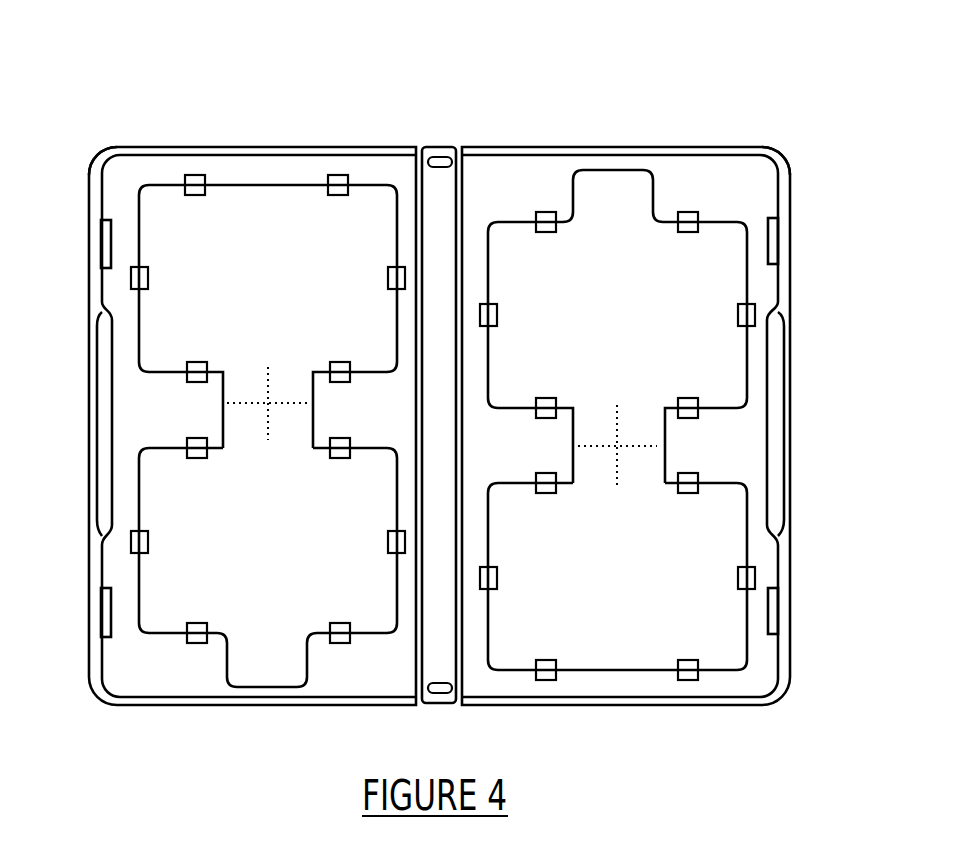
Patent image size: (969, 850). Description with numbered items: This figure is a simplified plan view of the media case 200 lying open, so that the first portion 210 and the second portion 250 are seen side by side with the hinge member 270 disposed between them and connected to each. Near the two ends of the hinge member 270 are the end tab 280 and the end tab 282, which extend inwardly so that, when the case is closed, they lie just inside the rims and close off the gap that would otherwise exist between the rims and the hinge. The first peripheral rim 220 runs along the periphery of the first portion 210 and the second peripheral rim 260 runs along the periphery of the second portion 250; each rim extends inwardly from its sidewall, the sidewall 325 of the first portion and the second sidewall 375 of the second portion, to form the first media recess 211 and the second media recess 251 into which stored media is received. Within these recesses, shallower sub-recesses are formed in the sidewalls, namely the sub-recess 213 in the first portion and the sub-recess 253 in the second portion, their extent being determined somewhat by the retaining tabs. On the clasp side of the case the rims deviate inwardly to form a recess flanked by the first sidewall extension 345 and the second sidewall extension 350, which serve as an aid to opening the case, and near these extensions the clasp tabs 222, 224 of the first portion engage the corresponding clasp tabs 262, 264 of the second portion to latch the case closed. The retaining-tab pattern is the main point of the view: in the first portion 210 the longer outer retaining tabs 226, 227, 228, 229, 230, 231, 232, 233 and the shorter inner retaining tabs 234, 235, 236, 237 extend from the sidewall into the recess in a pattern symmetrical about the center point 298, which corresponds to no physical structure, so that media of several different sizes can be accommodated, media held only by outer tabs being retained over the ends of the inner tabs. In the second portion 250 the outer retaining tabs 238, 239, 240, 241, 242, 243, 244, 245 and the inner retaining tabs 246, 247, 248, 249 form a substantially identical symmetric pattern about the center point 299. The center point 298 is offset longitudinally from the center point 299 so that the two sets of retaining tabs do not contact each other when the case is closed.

The media case 200 is at (686, 70).
The first portion 210 is at (243, 90).
The second portion 250 is at (555, 90).
The hinge member 270 is at (443, 102).
The end tab 280 is at (443, 157).
The end tab 282 is at (440, 704).
The first peripheral rim 220 is at (162, 152).
The second peripheral rim 260 is at (682, 155).
The sidewall 325 is at (117, 180).
The second sidewall 375 is at (748, 172).
The first sidewall extension 345 is at (95, 490).
The second sidewall extension 350 is at (781, 486).
The clasp tab 224 is at (103, 243).
The clasp tab 222 is at (100, 616).
The clasp tab 264 is at (775, 240).
The clasp tab 262 is at (775, 590).
The first media recess 211 is at (382, 420).
The sub-recess 213 is at (287, 475).
The sub-recess 253 is at (634, 375).
The second media recess 251 is at (541, 457).
The center point 298 is at (228, 398).
The center point 299 is at (618, 446).
The outer retaining tab 232 is at (204, 175).
The outer retaining tab 231 is at (348, 175).
The outer retaining tab 233 is at (130, 275).
The outer retaining tab 230 is at (385, 280).
The inner retaining tab 237 is at (196, 362).
The inner retaining tab 236 is at (340, 362).
The inner retaining tab 234 is at (195, 458).
The inner retaining tab 235 is at (340, 458).
The outer retaining tab 226 is at (151, 540).
The outer retaining tab 229 is at (385, 540).
The outer retaining tab 227 is at (197, 645).
The outer retaining tab 228 is at (340, 645).
The outer retaining tab 241 is at (545, 212).
The outer retaining tab 240 is at (692, 212).
The outer retaining tab 242 is at (502, 312).
The outer retaining tab 239 is at (735, 315).
The inner retaining tab 249 is at (545, 398).
The inner retaining tab 248 is at (688, 398).
The inner retaining tab 246 is at (546, 493).
The inner retaining tab 247 is at (688, 493).
The outer retaining tab 243 is at (502, 578).
The outer retaining tab 238 is at (755, 578).
The outer retaining tab 244 is at (546, 658).
The outer retaining tab 245 is at (688, 658).